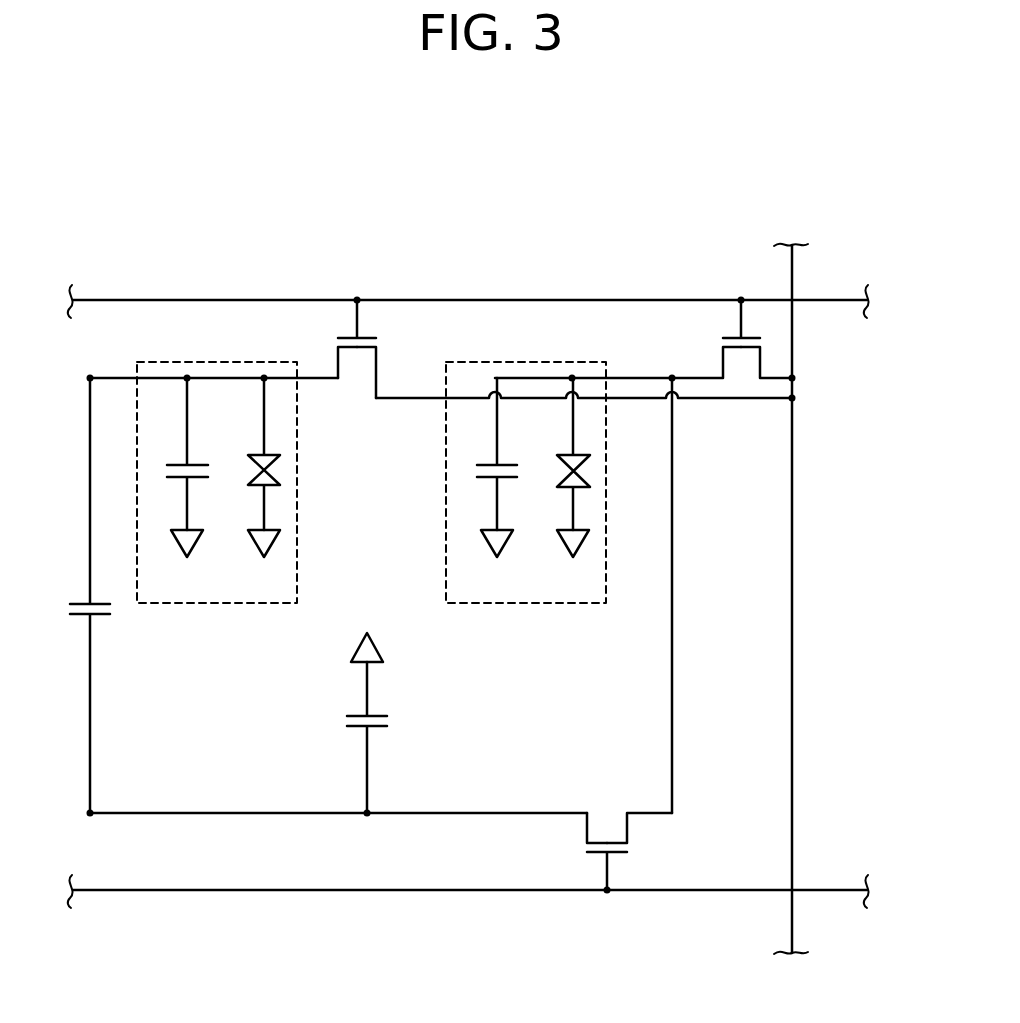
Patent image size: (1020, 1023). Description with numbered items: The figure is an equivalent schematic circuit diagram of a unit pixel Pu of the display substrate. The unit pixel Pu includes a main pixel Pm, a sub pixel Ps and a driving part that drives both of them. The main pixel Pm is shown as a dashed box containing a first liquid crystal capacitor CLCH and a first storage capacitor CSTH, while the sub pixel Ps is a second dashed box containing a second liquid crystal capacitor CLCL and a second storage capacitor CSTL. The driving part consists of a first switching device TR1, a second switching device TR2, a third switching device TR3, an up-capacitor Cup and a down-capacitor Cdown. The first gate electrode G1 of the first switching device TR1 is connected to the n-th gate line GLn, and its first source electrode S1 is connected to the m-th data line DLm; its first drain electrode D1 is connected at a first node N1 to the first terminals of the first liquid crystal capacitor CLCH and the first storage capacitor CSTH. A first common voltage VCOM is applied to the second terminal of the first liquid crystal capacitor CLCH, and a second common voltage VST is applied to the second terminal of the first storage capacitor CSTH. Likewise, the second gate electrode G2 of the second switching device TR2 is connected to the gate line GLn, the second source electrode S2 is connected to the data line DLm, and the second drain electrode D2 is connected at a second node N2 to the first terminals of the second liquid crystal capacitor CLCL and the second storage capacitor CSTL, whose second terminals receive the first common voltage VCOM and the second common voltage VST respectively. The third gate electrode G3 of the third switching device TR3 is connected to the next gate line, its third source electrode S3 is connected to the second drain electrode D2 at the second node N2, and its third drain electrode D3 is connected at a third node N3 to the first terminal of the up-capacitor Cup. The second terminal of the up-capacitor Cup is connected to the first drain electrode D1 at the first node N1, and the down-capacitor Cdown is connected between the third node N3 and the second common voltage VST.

The unit pixel Pu is at (473, 171).
The n-th gate line GLn is at (825, 300).
The m-th data line DLm is at (793, 568).
The first switching device TR1 is at (354, 334).
The second switching device TR2 is at (734, 326).
The third switching device TR3 is at (610, 869).
The first gate electrode G1 is at (365, 319).
The first drain electrode D1 is at (330, 362).
The first source electrode S1 is at (381, 372).
The second gate electrode G2 is at (733, 319).
The second drain electrode D2 is at (706, 362).
The second source electrode S2 is at (766, 362).
The third gate electrode G3 is at (615, 871).
The third drain electrode D3 is at (577, 831).
The third source electrode S3 is at (639, 831).
The first node N1 is at (195, 380).
The second node N2 is at (672, 378).
The third node N3 is at (321, 815).
The up-capacitor Cup is at (65, 595).
The down-capacitor Cdown is at (409, 737).
The main pixel Pm is at (223, 522).
The sub pixel Ps is at (532, 522).
The first storage capacitor CSTH is at (158, 454).
The first liquid crystal capacitor CLCH is at (293, 454).
The second storage capacitor CSTL is at (467, 454).
The second liquid crystal capacitor CLCL is at (601, 454).
The second common voltage VST is at (342, 596).
The first common voltage VCOM is at (419, 560).